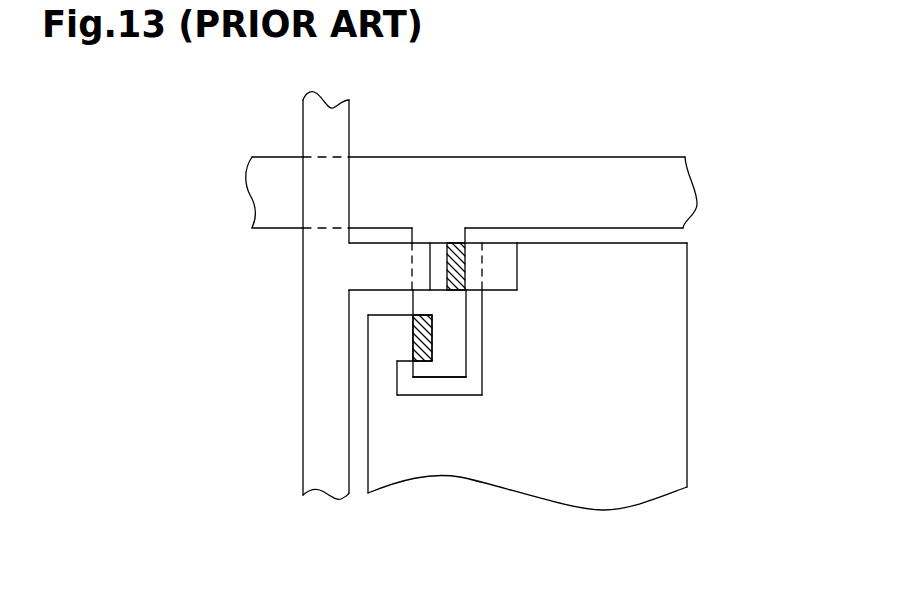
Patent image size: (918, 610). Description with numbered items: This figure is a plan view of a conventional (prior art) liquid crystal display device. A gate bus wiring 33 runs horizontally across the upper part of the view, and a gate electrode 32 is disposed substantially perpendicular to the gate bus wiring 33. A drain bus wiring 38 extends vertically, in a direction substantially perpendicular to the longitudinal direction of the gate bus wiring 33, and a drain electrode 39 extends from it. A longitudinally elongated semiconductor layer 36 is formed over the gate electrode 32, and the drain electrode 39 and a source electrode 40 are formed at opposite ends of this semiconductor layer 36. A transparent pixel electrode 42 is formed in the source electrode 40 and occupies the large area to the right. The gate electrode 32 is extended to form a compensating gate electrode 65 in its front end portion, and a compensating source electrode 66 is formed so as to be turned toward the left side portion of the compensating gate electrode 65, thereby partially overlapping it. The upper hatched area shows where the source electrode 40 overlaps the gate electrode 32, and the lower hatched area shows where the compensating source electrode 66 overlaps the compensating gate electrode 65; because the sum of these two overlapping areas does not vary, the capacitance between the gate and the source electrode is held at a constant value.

The gate electrode 32 is at (442, 297).
The gate bus wiring 33 is at (607, 195).
The semiconductor layer 36 is at (436, 253).
The drain bus wiring 38 is at (322, 420).
The drain electrode 39 is at (382, 268).
The source electrode 40 is at (477, 268).
The transparent pixel electrode 42 is at (655, 365).
The compensating gate electrode 65 is at (453, 355).
The compensating source electrode 66 is at (415, 347).